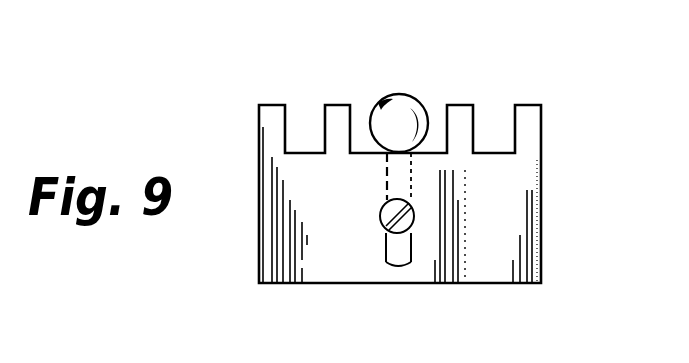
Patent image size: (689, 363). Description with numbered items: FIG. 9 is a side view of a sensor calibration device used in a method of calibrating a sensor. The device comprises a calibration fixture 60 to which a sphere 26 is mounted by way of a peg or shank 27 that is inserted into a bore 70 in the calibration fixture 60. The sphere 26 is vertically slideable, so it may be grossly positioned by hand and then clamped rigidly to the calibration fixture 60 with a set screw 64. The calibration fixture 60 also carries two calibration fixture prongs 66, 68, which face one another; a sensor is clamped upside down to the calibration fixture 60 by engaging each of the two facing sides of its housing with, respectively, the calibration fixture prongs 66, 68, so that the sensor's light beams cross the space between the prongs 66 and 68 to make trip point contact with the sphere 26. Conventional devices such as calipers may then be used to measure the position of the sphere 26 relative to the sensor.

The sphere 26 is at (413, 103).
The shank 27 is at (425, 170).
The calibration fixture 60 is at (418, 173).
The set screw 64 is at (415, 223).
The calibration fixture prong 66 is at (258, 112).
The calibration fixture prong 68 is at (541, 105).
The bore 70 is at (385, 262).